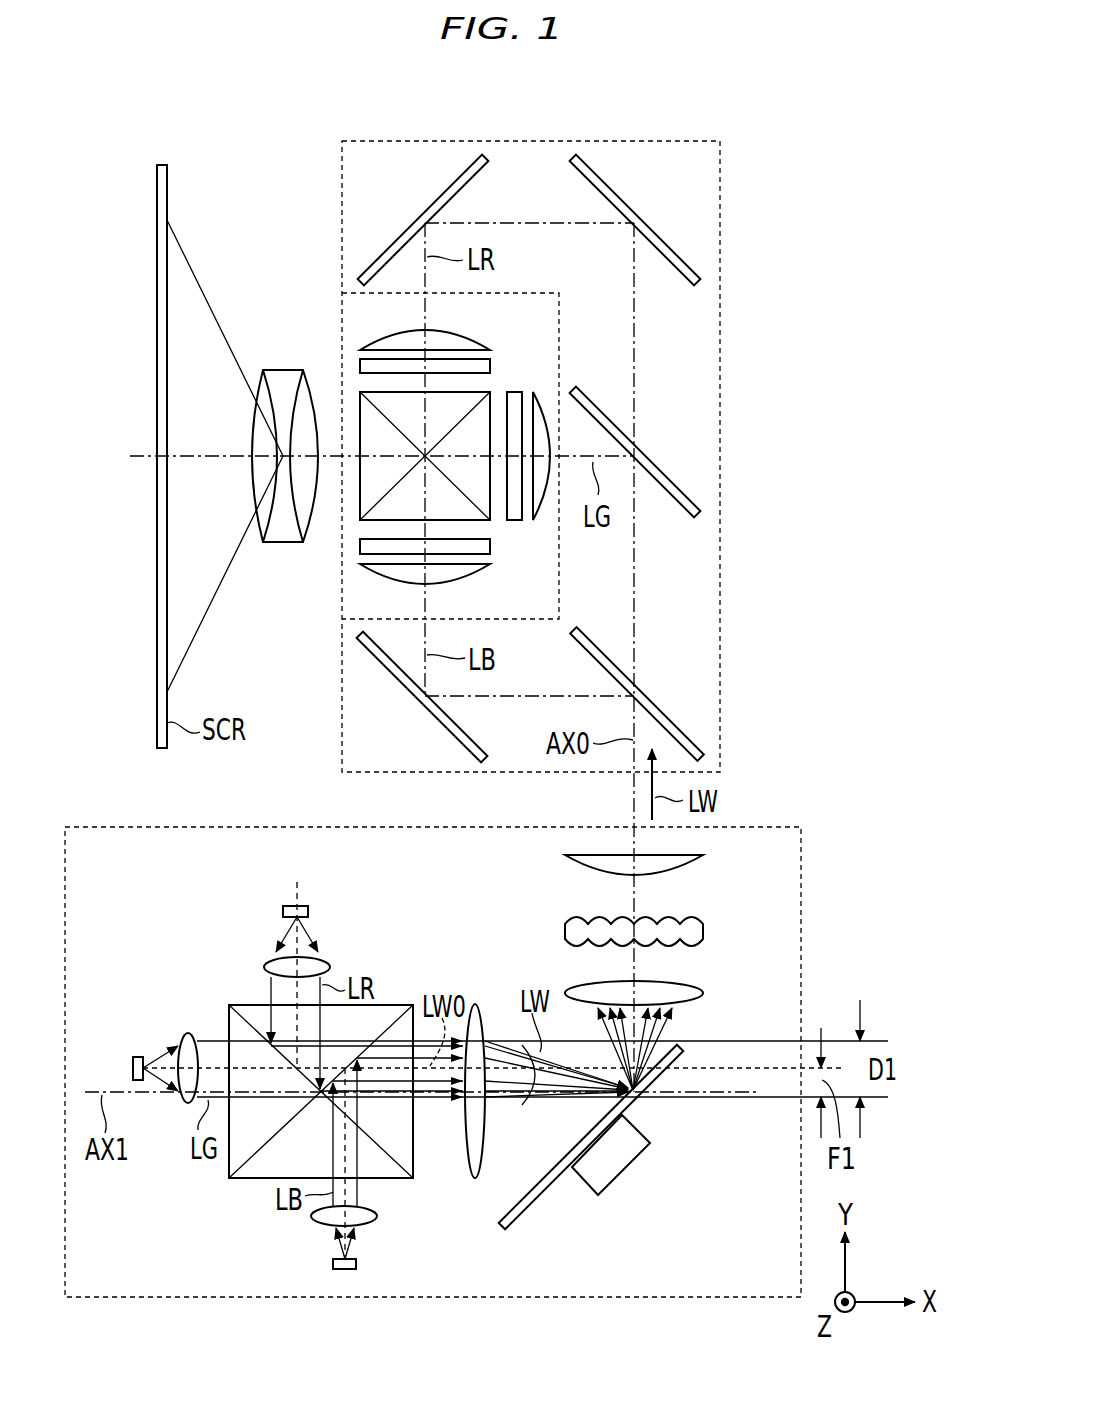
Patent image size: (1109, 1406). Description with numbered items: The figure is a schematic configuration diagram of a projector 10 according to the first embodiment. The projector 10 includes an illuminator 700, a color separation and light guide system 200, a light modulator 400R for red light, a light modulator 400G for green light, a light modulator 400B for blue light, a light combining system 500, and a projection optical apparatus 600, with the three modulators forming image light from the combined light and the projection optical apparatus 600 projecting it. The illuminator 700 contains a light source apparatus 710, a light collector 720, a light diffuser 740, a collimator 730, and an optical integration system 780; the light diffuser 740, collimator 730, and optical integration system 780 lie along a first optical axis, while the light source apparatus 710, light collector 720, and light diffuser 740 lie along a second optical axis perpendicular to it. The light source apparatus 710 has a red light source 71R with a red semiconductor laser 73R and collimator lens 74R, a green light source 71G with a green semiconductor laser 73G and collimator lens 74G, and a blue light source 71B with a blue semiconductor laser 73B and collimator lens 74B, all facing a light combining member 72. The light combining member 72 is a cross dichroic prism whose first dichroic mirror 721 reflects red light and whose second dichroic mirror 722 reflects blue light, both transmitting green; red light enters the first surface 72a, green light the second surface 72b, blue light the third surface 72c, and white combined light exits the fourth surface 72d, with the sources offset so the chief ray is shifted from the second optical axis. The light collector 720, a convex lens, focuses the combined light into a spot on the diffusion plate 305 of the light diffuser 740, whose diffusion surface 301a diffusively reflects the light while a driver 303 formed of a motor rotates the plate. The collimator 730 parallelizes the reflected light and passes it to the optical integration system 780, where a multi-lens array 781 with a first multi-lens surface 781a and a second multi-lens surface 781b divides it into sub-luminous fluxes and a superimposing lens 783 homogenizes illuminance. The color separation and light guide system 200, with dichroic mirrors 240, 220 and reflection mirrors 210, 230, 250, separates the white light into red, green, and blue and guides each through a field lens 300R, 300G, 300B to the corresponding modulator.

The projector 10 is at (792, 155).
The color separation and light guide system 200 is at (342, 162).
The reflection mirror 210 is at (657, 233).
The dichroic mirror 220 is at (658, 468).
The reflection mirror 230 is at (442, 193).
The dichroic mirror 240 is at (655, 707).
The reflection mirror 250 is at (437, 717).
The field lens 300R is at (360, 347).
The field lens 300G is at (537, 397).
The field lens 300B is at (360, 567).
The light modulator for red light 400R is at (360, 368).
The light modulator for green light 400G is at (515, 517).
The light modulator for blue light 400B is at (360, 545).
The light combining system 500 is at (368, 410).
The projection optical apparatus 600 is at (260, 475).
The illuminator 700 is at (800, 858).
The light source apparatus 710 is at (335, 910).
The red light source 71R is at (258, 904).
The green light source 71G is at (152, 1084).
The blue light source 71B is at (349, 1249).
The red semiconductor laser 73R is at (283, 910).
The green semiconductor laser 73G is at (138, 1055).
The blue semiconductor laser 73B is at (333, 1264).
The collimator lens 74R is at (266, 963).
The collimator lens 74G is at (188, 1033).
The collimator lens 74B is at (312, 1218).
The light combining member 72 is at (317, 1071).
The first surface 72a is at (402, 1003).
The second surface 72b is at (227, 1172).
The third surface 72c is at (395, 1180).
The fourth surface 72d is at (415, 1160).
The first dichroic mirror 721 is at (372, 1145).
The second dichroic mirror 722 is at (390, 1020).
The light collector 720 is at (472, 1018).
The light diffuser 740 is at (620, 1162).
The diffusion plate 305 is at (620, 1137).
The diffusion surface 301a is at (535, 1190).
The driver 303 is at (617, 1165).
The optical integration system 780 is at (626, 928).
The collimator 730 is at (700, 996).
The multi-lens array 781 is at (677, 933).
The first multi-lens surface 781a is at (675, 945).
The second multi-lens surface 781b is at (675, 918).
The superimposing lens 783 is at (700, 860).